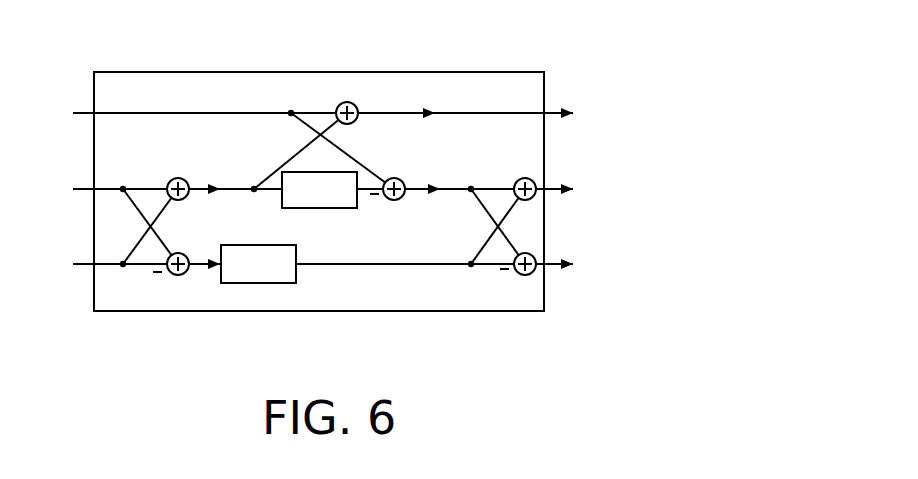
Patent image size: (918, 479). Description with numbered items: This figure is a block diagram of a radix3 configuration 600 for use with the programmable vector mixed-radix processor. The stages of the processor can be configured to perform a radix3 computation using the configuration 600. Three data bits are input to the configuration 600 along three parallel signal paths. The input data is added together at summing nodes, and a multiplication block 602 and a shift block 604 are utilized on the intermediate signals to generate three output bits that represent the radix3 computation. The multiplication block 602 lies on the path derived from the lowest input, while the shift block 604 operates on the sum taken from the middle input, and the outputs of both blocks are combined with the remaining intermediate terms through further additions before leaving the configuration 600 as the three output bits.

The radix3 configuration 600 is at (324, 165).
The multiplication block 602 is at (287, 277).
The shift block 604 is at (344, 203).